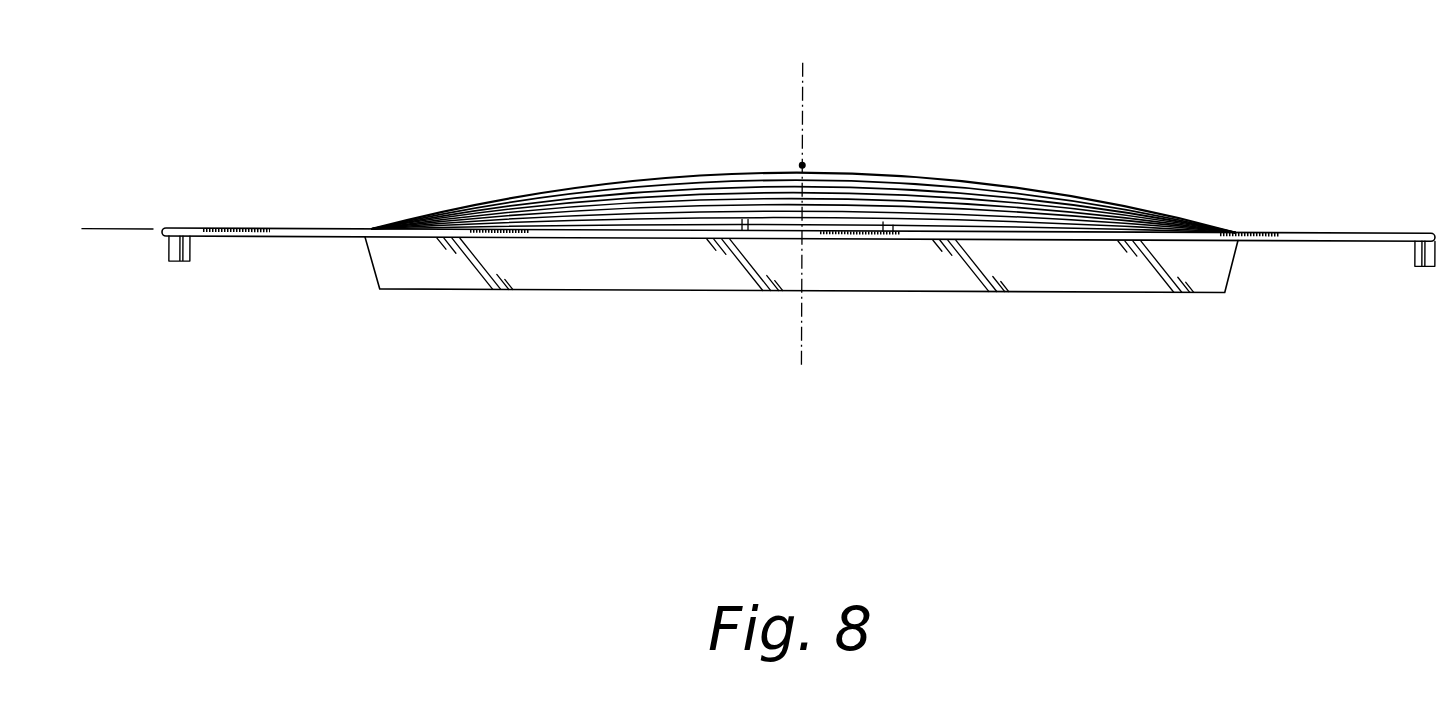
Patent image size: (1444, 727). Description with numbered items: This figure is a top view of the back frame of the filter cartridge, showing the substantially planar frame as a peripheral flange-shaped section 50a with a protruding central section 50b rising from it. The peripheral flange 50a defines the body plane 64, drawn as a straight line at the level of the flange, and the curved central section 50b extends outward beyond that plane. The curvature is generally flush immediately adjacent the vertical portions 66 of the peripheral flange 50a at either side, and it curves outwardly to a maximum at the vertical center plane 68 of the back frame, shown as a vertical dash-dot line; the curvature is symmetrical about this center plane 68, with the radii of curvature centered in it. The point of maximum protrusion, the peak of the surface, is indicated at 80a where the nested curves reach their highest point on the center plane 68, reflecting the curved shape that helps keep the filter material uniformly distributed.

The peripheral flange-shaped section 50a is at (261, 237).
The protruding central section 50b is at (1003, 181).
The body plane 64 is at (118, 230).
The vertical portions of the peripheral flange 66 is at (222, 228).
The vertical center plane 68 is at (802, 97).
The peak of the surface 80a is at (803, 160).